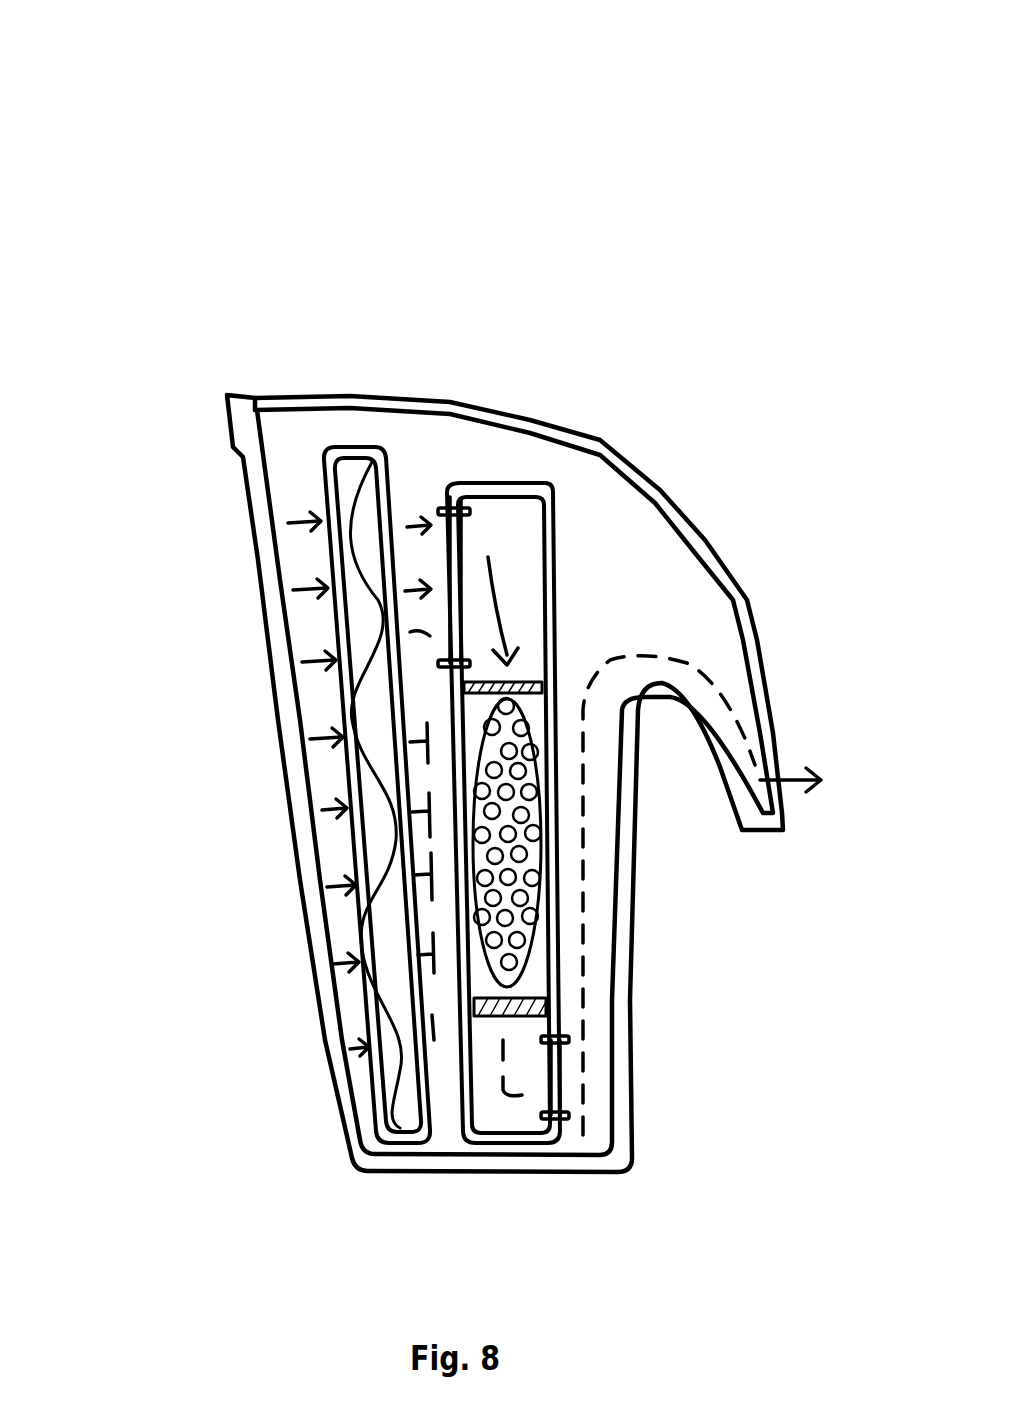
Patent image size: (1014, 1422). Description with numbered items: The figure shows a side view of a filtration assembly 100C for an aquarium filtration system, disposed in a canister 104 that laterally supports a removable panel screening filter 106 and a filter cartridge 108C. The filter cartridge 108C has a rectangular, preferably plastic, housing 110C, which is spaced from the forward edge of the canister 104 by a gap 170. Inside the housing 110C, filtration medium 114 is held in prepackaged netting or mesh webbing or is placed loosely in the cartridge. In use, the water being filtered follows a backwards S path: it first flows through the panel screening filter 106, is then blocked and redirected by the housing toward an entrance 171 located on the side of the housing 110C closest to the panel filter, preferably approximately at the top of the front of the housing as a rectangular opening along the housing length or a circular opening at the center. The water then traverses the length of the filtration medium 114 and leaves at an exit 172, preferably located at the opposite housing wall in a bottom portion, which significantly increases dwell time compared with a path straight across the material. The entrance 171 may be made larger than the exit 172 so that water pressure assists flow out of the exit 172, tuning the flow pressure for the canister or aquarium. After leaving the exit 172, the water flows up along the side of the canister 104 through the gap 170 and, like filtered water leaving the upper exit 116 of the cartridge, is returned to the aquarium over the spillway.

The filtration assembly 100C is at (408, 590).
The canister 104 is at (257, 532).
The panel screening filter 106 is at (370, 740).
The filter cartridge 108C is at (460, 488).
The housing 110C is at (490, 482).
The filtration medium 114 is at (630, 928).
The upper exit 116 is at (662, 570).
The gap 170 is at (556, 860).
The entrance 171 is at (452, 568).
The exit 172 is at (560, 1078).